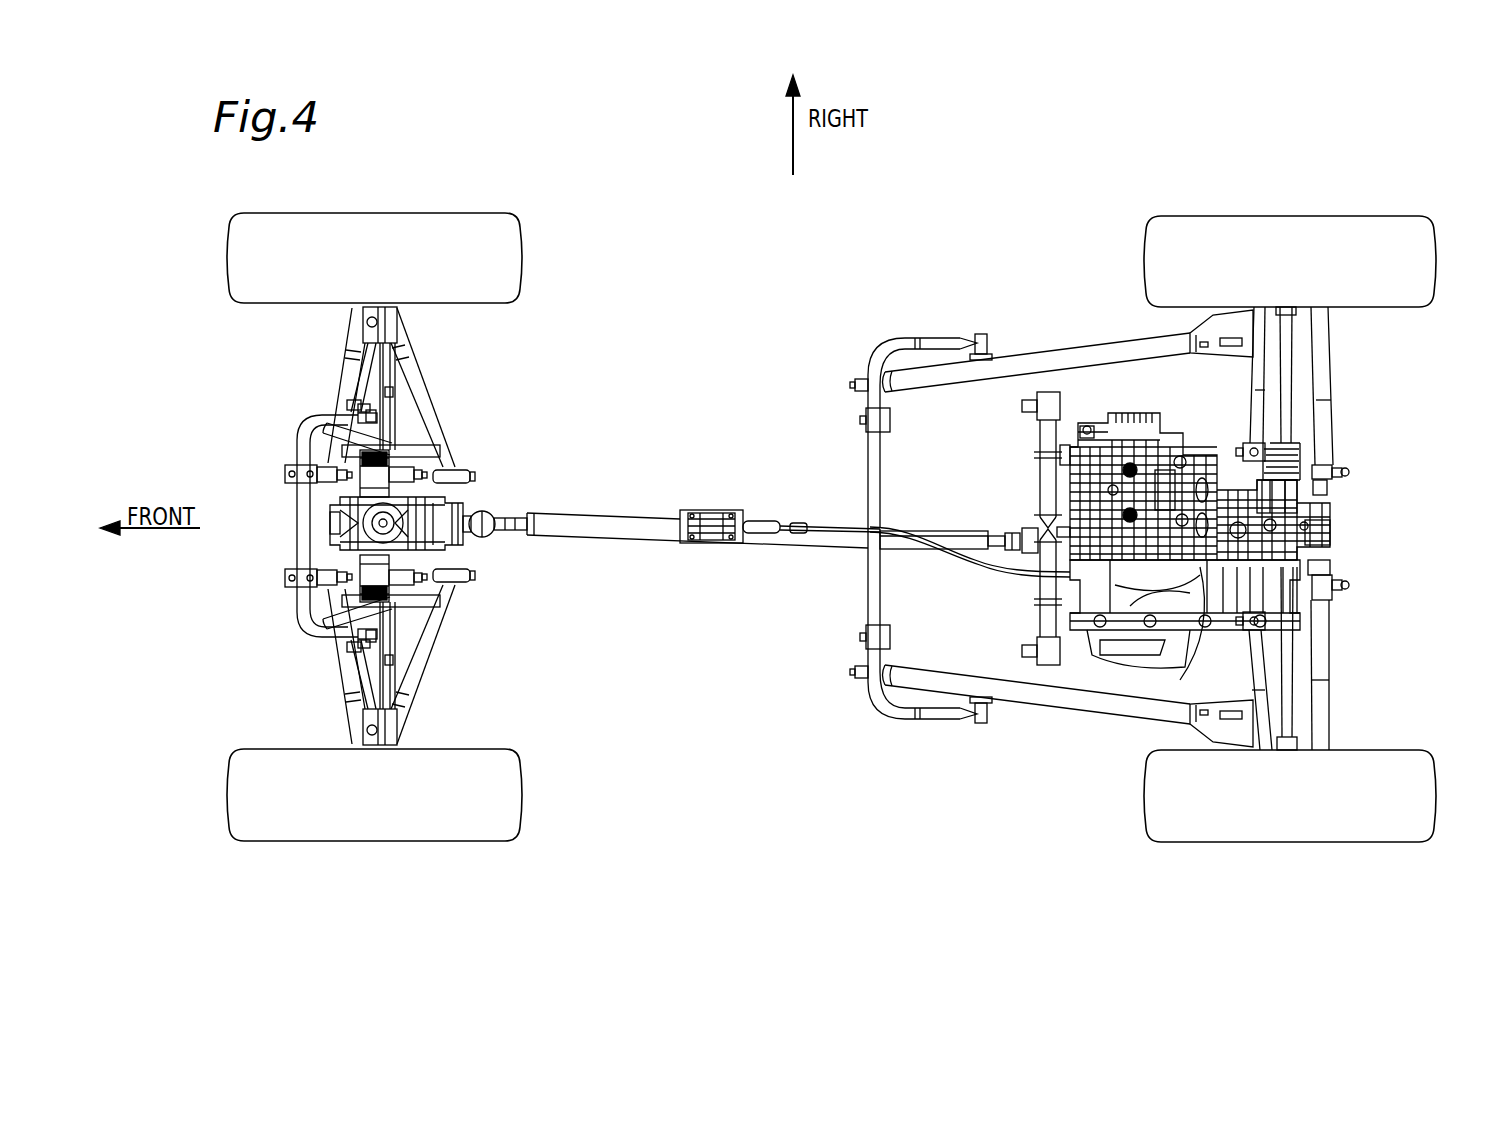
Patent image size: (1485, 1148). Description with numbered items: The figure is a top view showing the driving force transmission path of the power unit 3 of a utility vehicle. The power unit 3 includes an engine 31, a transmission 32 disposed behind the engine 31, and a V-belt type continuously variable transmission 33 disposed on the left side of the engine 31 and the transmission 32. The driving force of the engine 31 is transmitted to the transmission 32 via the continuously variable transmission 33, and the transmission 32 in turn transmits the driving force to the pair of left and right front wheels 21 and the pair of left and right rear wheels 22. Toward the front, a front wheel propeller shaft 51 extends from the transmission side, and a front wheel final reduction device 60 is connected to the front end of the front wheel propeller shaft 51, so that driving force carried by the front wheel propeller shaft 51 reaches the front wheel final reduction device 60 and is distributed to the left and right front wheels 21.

The power unit 3 is at (1324, 613).
The front wheels 21 is at (363, 233).
The rear wheels 22 is at (1280, 237).
The engine 31 is at (1147, 505).
The transmission 32 is at (1322, 489).
The V-belt type continuously variable transmission 33 is at (1193, 643).
The front wheel propeller shaft 51 is at (817, 537).
The front wheel final reduction device 60 is at (443, 470).